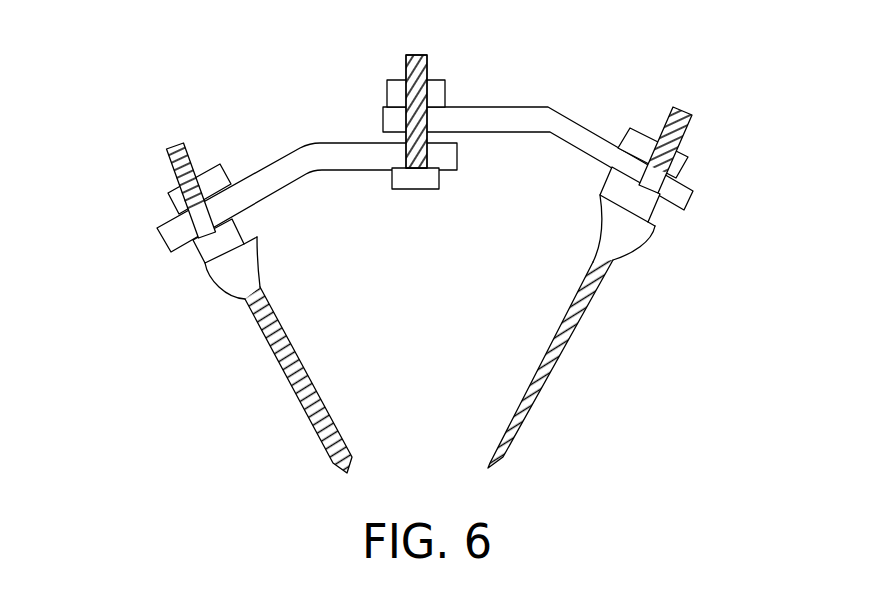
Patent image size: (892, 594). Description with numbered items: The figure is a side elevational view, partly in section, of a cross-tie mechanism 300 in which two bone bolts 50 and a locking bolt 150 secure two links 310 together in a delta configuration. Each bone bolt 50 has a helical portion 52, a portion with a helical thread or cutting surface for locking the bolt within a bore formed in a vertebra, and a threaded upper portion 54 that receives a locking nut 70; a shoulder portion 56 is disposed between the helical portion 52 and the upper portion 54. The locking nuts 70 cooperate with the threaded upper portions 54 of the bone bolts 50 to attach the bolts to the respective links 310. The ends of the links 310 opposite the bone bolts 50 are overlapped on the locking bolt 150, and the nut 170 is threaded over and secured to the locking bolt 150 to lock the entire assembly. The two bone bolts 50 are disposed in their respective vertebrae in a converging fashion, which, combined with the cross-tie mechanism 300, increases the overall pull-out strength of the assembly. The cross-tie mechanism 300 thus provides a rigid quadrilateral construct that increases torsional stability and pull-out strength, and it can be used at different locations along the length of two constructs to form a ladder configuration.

The cross-tie mechanism 300 is at (286, 100).
The link 310 is at (263, 170).
The locking bolt 150 is at (426, 58).
The nut 170 is at (438, 93).
The bone bolt 50 is at (212, 337).
The helical portion 52 is at (293, 392).
The upper portion 54 is at (677, 106).
The shoulder portion 56 is at (670, 212).
The locking nut 70 is at (170, 204).